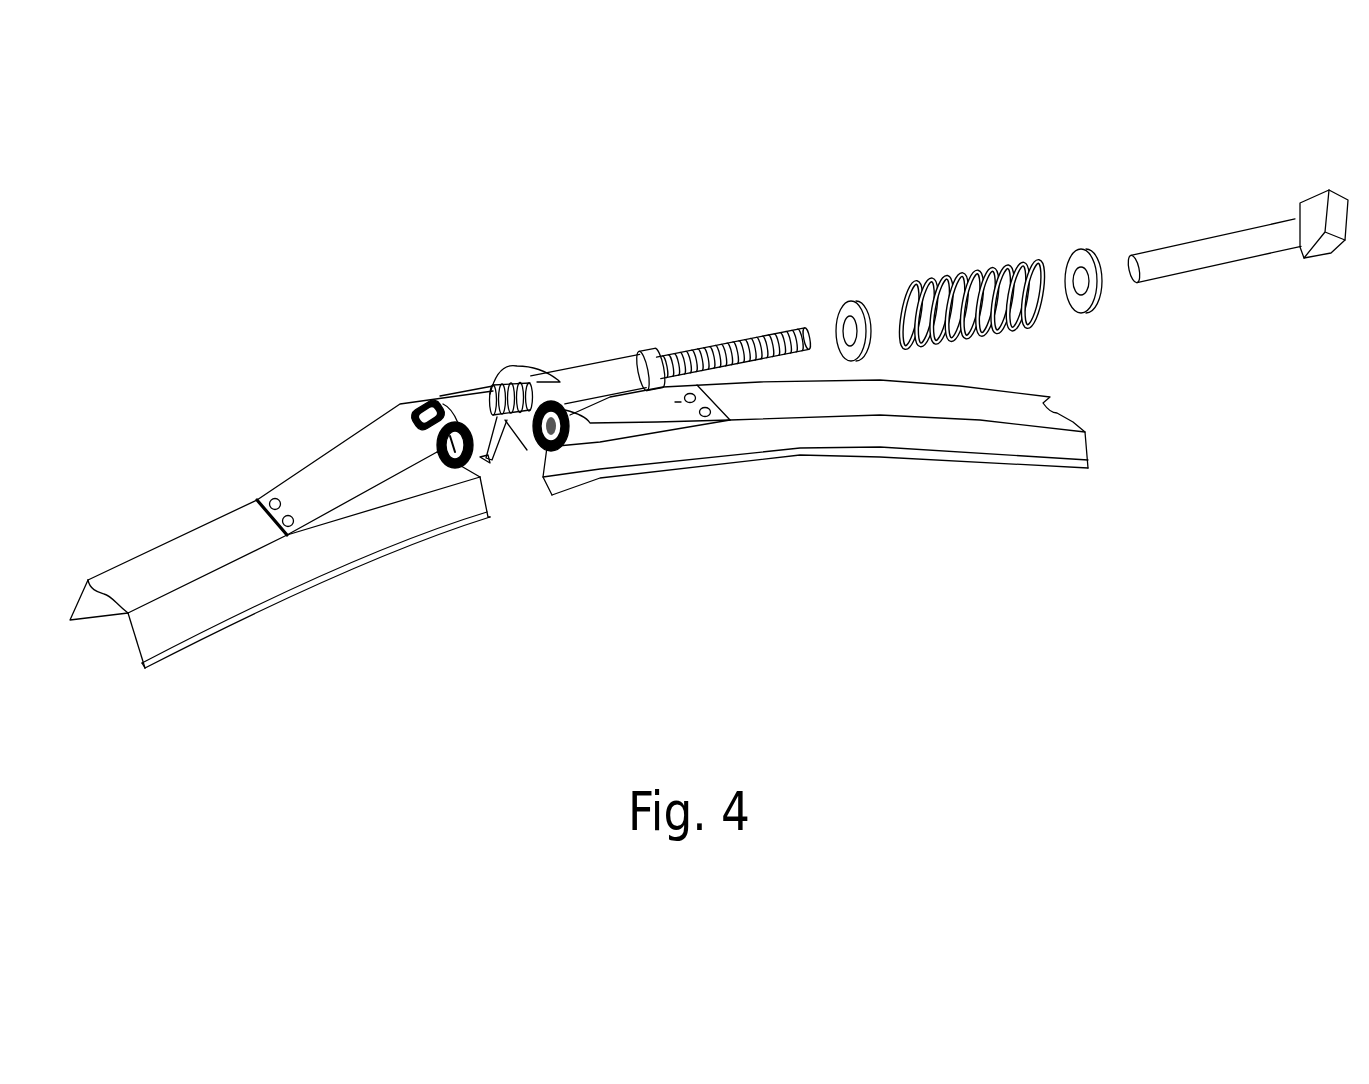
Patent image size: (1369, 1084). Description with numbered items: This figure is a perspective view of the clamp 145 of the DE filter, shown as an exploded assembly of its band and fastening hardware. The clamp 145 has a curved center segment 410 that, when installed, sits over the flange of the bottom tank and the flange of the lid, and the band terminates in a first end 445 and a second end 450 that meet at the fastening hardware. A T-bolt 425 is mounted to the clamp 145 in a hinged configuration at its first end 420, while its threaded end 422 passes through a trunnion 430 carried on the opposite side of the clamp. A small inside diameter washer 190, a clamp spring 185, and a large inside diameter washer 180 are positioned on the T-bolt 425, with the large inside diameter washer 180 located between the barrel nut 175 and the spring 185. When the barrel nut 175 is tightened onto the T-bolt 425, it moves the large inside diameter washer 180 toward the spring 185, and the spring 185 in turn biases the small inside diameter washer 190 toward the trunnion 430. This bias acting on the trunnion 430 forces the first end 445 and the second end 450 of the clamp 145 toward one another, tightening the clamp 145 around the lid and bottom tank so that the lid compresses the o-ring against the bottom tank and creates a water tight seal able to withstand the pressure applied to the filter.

The clamp 145 is at (237, 508).
The center segment 410 is at (160, 560).
The first end 445 is at (487, 508).
The first end 420 is at (435, 397).
The trunnion 430 is at (591, 366).
The T-bolt 425 is at (505, 456).
The threaded end 422 is at (728, 350).
The second end 450 is at (577, 490).
The small inside diameter washer 190 is at (860, 362).
The clamp spring 185 is at (940, 282).
The large inside diameter washer 180 is at (1093, 322).
The barrel nut 175 is at (1235, 267).